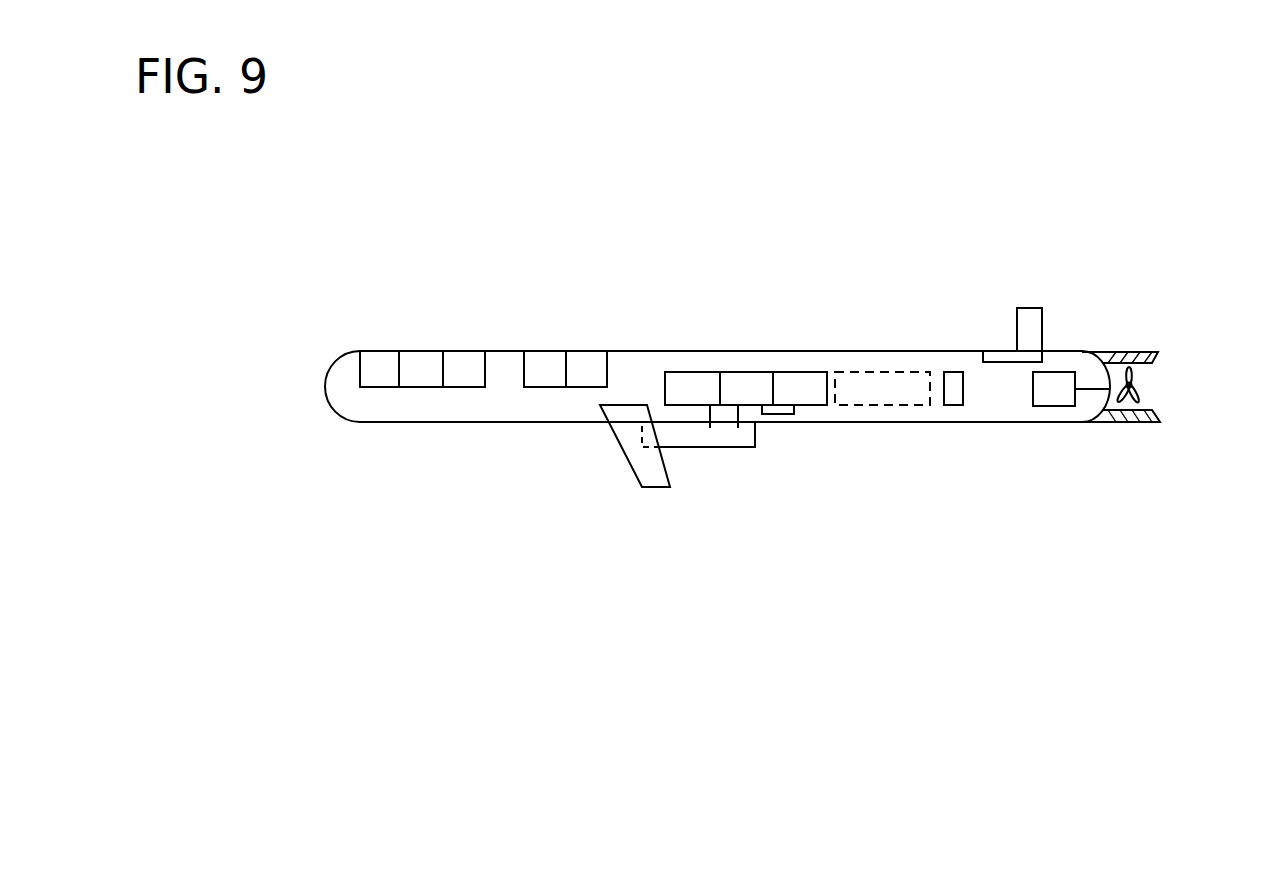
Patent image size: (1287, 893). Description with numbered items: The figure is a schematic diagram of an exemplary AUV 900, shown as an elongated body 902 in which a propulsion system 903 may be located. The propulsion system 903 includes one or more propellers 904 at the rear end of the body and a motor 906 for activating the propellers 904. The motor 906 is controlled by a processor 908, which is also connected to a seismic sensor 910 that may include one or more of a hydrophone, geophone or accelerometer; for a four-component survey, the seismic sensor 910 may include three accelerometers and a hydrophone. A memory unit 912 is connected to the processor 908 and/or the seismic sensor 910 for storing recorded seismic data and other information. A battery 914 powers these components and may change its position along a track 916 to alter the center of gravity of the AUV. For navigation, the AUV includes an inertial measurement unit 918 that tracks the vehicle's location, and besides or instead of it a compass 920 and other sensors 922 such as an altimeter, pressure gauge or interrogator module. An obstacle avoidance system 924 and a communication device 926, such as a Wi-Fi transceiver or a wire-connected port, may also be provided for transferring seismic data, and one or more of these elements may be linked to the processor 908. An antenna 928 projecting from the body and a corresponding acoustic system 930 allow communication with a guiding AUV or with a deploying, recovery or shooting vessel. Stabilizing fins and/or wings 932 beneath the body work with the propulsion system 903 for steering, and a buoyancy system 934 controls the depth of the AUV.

The AUV 900 is at (797, 205).
The body 902 is at (505, 388).
The propulsion system 903 is at (1149, 458).
The propeller 904 is at (1135, 377).
The motor 906 is at (1050, 395).
The processor 908 is at (748, 387).
The seismic sensor 910 is at (697, 447).
The memory unit 912 is at (692, 385).
The battery 914 is at (800, 385).
The track 916 is at (890, 383).
The inertial measurement unit 918 is at (595, 380).
The compass 920 is at (540, 377).
The other sensors 922 is at (467, 380).
The obstacle avoidance system 924 is at (422, 363).
The communication device 926 is at (377, 362).
The antenna 928 is at (1035, 323).
The acoustic system 930 is at (1003, 363).
The stabilizing fins and/or wings 932 is at (638, 482).
The buoyancy system 934 is at (955, 392).